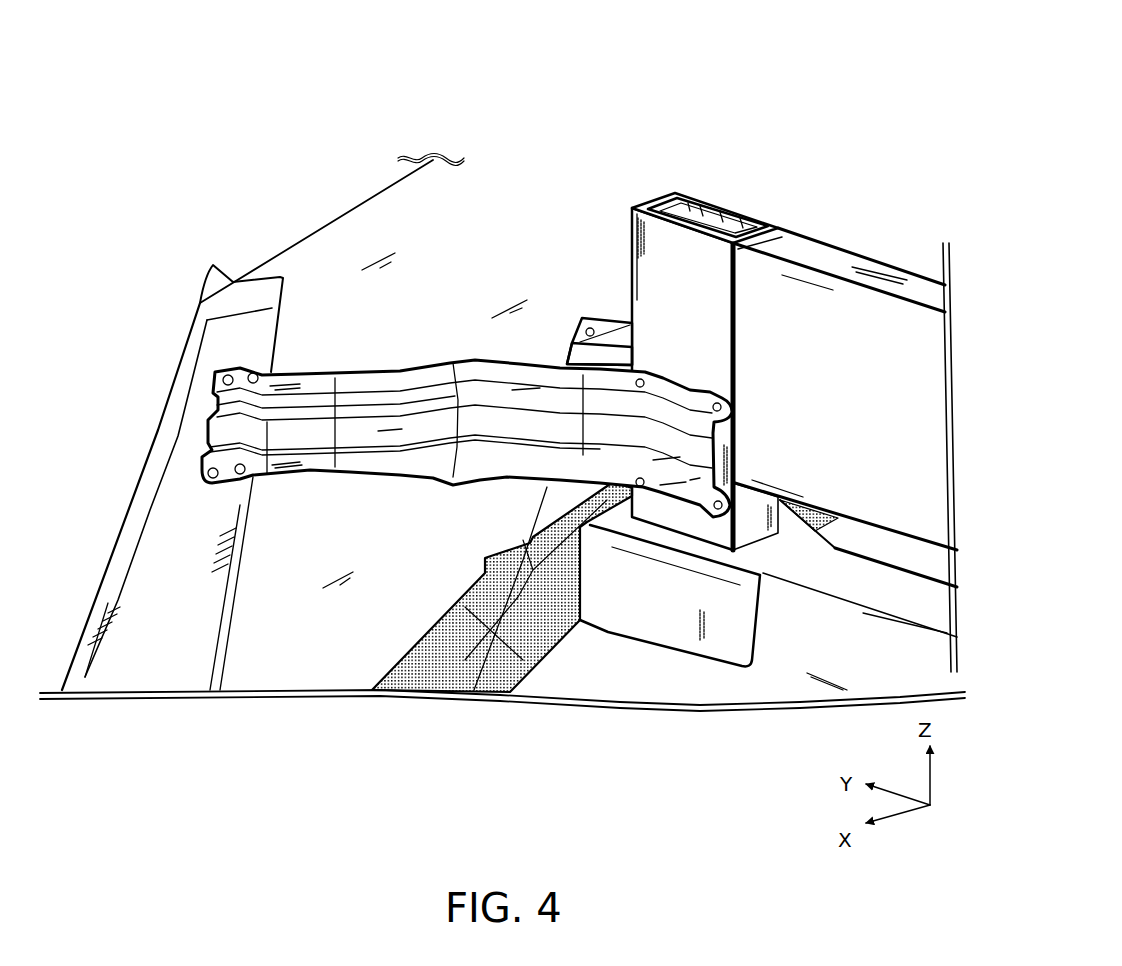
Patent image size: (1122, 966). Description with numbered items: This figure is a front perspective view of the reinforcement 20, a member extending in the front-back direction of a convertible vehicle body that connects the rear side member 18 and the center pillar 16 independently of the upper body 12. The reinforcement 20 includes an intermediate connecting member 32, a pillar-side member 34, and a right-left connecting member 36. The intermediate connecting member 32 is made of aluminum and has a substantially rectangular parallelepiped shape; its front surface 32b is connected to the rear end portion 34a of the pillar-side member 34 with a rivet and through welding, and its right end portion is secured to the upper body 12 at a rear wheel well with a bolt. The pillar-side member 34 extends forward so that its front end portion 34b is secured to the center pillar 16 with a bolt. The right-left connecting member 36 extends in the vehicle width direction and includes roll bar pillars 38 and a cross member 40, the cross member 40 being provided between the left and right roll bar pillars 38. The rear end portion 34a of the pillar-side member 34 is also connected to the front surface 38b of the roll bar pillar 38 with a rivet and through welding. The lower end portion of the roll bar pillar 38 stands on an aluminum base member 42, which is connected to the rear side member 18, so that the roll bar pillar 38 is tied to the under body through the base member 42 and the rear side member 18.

The upper body 12 is at (470, 276).
The center pillar 16 is at (172, 428).
The rear side member 18 is at (502, 626).
The reinforcement 20 is at (514, 122).
The intermediate connecting member 32 is at (599, 274).
The front surface 32b is at (575, 310).
The pillar-side member 34 is at (467, 561).
The rear end portion 34a is at (487, 625).
The front end portion 34b is at (239, 619).
The right-left connecting member 36 is at (786, 319).
The roll bar pillar 38 is at (708, 340).
The front surface 38b is at (639, 205).
The cross member 40 is at (752, 130).
The base member 42 is at (768, 637).